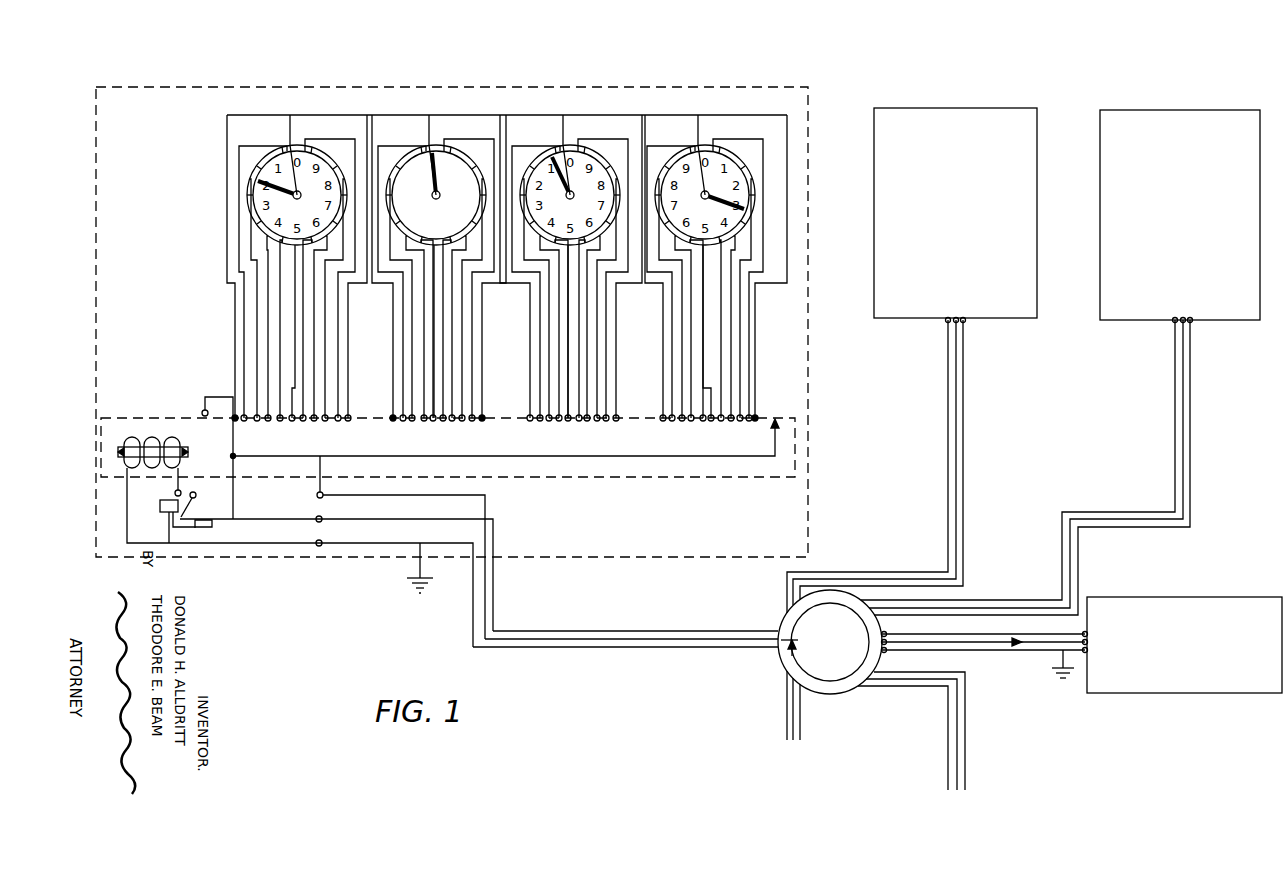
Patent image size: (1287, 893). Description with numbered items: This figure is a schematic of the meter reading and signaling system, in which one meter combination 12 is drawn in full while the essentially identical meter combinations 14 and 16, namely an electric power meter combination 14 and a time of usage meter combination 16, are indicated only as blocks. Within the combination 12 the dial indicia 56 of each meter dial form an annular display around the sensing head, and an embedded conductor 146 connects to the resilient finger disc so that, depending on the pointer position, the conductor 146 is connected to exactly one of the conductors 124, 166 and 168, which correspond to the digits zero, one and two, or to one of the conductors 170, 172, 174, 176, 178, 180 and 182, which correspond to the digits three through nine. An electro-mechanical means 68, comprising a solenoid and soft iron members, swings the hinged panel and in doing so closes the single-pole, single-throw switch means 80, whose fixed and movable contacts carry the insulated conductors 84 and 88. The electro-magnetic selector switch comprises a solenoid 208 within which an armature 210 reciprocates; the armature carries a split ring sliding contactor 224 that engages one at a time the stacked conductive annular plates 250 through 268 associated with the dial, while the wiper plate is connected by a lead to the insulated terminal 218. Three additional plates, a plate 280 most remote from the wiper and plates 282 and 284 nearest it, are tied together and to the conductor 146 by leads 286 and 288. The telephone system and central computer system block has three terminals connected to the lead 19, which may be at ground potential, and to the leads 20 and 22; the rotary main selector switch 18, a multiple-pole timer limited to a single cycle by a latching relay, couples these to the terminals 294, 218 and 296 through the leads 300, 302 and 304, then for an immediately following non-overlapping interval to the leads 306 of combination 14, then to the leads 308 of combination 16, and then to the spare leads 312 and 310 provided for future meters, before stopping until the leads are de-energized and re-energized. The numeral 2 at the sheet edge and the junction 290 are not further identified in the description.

The telephone system and central computer system 2 is at (1278, 594).
The meter combination 12 is at (381, 84).
The meter combination 14 is at (977, 103).
The meter combination 16 is at (1212, 106).
The main selector switch 18 is at (808, 655).
The telephone equipment electrical conductor 19 is at (1019, 655).
The telephone equipment electrical conductor 20 is at (1020, 622).
The telephone equipment electrical conductor 22 is at (1053, 622).
The dial indicia 56 is at (420, 158).
The electro-mechanical means 68 is at (138, 521).
The switch means 80 is at (224, 500).
The insulated electric conductor 84 is at (196, 529).
The insulated conductor 88 is at (181, 484).
The electric conductor 124 is at (458, 140).
The electrical conductor 146 is at (440, 138).
The electric conductor 166 is at (492, 148).
The electric conductor 168 is at (508, 152).
The electric conductor 170 is at (452, 310).
The electric conductor 172 is at (443, 333).
The electric conductor 174 is at (433, 358).
The electric conductor 176 is at (424, 405).
The electric conductor 178 is at (412, 340).
The electric conductor 180 is at (401, 312).
The electric conductor 182 is at (397, 330).
The solenoid 208 is at (133, 438).
The armature 210 is at (152, 442).
The insulated terminal 218 is at (324, 496).
The split ring sliding contactor 224 is at (775, 440).
The conductive annular plate 250 is at (483, 421).
The conductive annular plate 268 is at (393, 421).
The conductive plate 280 is at (757, 420).
The conductive plate 282 is at (236, 420).
The conductive plate 284 is at (203, 411).
The lead 286 is at (236, 318).
The lead 288 is at (222, 386).
The junction conductor 290 is at (232, 455).
The terminal 294 is at (127, 476).
The terminal 296 is at (323, 519).
The lead 300 is at (646, 650).
The lead 302 is at (598, 630).
The lead 304 is at (645, 637).
The leads 306 is at (958, 514).
The leads 308 is at (1070, 544).
The leads 310 is at (790, 718).
The leads 312 is at (946, 748).